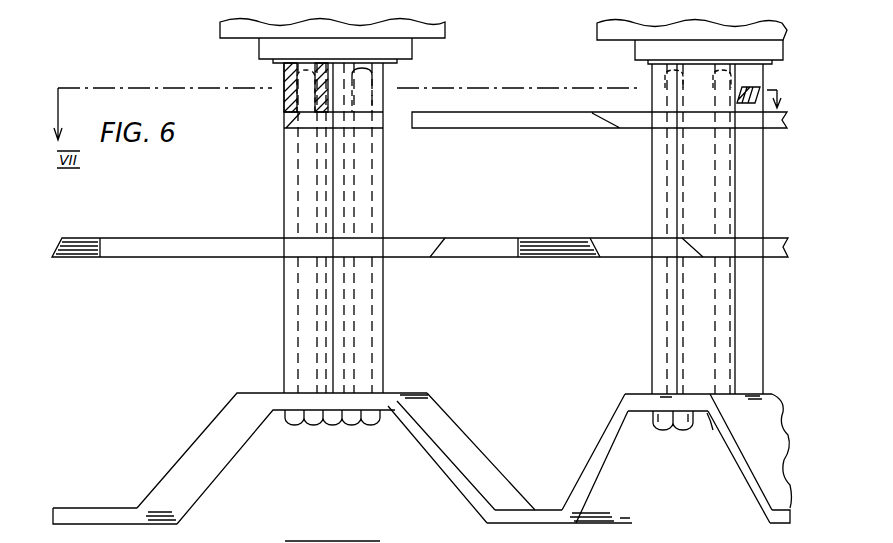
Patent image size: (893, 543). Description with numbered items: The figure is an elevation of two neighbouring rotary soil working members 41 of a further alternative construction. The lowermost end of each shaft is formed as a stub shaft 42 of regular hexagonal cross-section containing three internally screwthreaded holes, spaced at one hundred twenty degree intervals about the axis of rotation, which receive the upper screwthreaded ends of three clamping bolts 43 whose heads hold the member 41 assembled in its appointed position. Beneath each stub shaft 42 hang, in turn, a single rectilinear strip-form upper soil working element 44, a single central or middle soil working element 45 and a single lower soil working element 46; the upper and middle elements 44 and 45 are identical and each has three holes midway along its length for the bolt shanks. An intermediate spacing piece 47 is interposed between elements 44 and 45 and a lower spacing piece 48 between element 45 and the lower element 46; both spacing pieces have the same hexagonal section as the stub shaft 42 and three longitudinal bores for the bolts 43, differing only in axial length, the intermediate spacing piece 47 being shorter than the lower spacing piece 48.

The rotary soil working member 41 is at (278, 215).
The stub shaft 42 is at (383, 80).
The clamping bolt 43 is at (305, 425).
The upper soil working element 44 is at (383, 120).
The central or middle soil working element 45 is at (158, 257).
The lower soil working element 46 is at (204, 489).
The intermediate spacing piece 47 is at (383, 222).
The lower spacing piece 48 is at (383, 348).